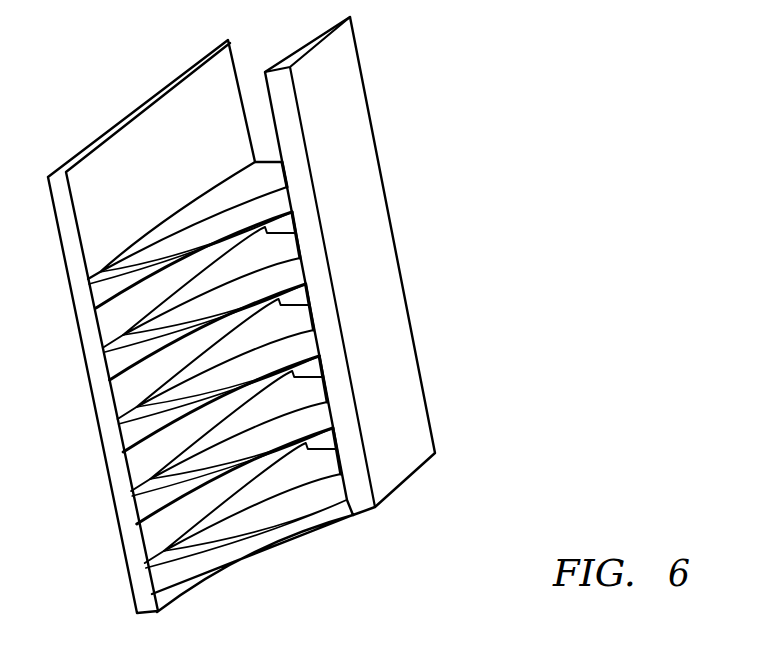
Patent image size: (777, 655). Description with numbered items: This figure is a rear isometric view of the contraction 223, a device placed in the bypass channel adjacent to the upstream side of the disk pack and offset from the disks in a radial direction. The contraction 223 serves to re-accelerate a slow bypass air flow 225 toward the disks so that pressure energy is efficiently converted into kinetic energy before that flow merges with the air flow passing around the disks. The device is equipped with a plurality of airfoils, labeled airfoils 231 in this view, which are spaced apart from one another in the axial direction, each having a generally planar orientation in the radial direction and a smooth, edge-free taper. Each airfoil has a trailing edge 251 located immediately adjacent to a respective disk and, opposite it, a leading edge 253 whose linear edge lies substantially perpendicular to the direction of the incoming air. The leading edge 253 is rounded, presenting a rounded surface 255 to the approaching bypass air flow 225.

The contraction 223 is at (480, 118).
The slow bypass air flow 225 is at (208, 158).
The trailing edge 251 is at (196, 234).
The leading edge 253 is at (317, 363).
The rounded surface 255 is at (337, 463).
The airfoil 231 is at (273, 490).